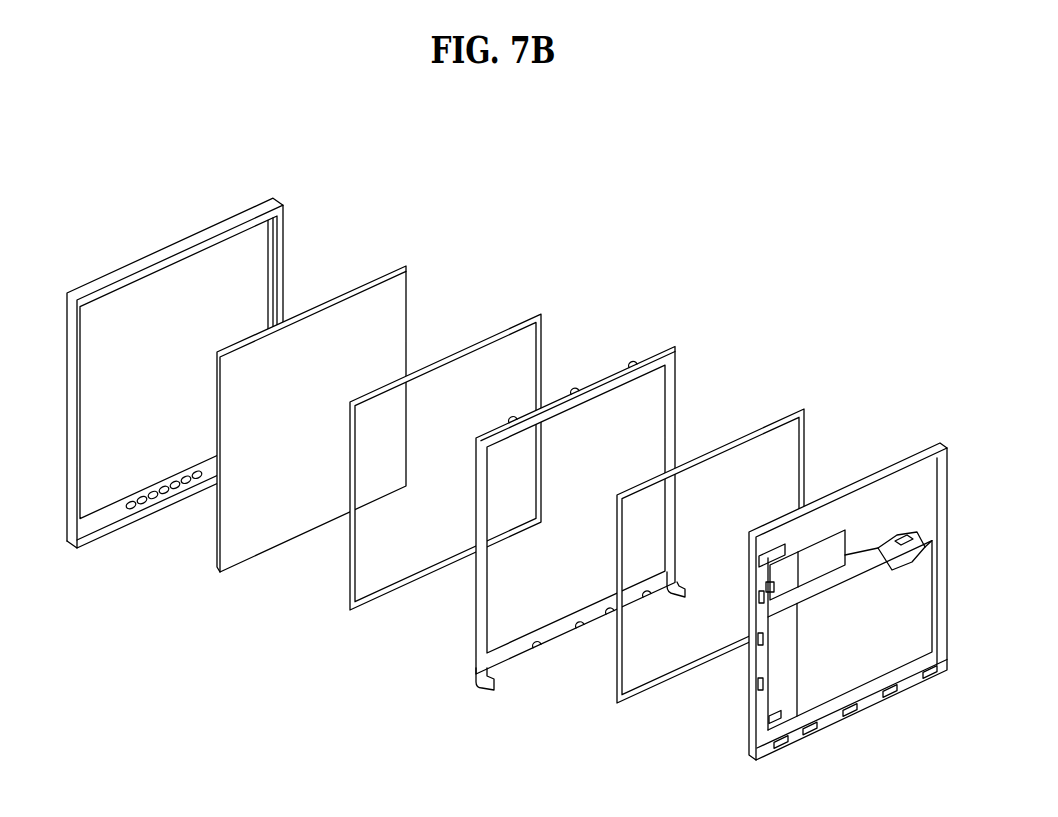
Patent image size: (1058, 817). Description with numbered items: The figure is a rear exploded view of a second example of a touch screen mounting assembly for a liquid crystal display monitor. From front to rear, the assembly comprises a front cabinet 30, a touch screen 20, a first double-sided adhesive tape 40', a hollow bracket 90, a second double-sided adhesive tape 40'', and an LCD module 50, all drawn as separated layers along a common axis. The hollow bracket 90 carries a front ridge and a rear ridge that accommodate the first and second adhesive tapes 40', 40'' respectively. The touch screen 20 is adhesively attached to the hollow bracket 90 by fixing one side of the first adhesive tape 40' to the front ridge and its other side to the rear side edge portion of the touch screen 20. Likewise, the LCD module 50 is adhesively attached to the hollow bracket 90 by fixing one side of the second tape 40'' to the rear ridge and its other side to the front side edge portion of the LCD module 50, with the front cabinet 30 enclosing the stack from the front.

The front cabinet 30 is at (229, 212).
The touch screen 20 is at (353, 288).
The first double-sided adhesive tape 40' is at (445, 416).
The hollow bracket 90 is at (623, 368).
The second double-sided adhesive tape 40'' is at (710, 507).
The LCD module 50 is at (889, 466).